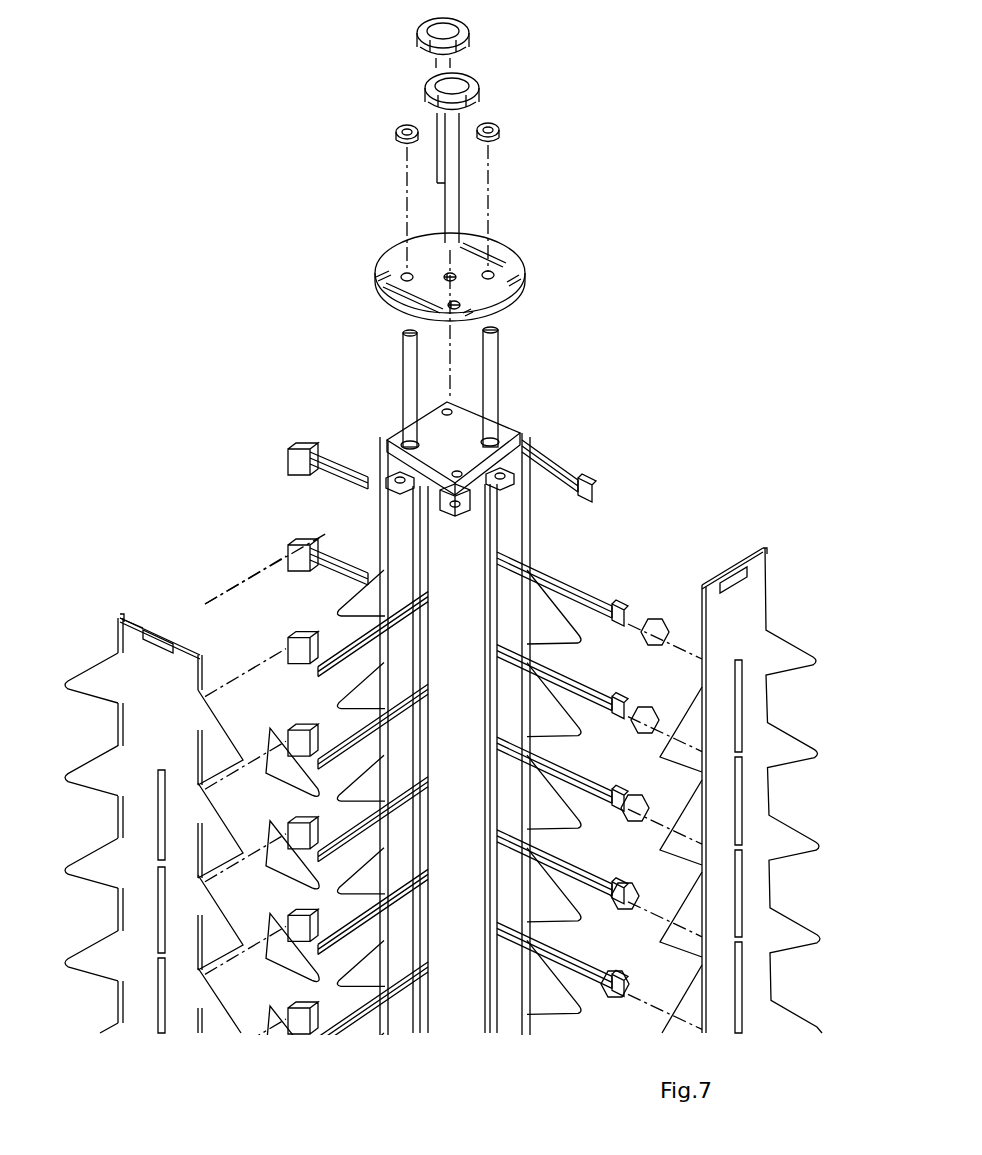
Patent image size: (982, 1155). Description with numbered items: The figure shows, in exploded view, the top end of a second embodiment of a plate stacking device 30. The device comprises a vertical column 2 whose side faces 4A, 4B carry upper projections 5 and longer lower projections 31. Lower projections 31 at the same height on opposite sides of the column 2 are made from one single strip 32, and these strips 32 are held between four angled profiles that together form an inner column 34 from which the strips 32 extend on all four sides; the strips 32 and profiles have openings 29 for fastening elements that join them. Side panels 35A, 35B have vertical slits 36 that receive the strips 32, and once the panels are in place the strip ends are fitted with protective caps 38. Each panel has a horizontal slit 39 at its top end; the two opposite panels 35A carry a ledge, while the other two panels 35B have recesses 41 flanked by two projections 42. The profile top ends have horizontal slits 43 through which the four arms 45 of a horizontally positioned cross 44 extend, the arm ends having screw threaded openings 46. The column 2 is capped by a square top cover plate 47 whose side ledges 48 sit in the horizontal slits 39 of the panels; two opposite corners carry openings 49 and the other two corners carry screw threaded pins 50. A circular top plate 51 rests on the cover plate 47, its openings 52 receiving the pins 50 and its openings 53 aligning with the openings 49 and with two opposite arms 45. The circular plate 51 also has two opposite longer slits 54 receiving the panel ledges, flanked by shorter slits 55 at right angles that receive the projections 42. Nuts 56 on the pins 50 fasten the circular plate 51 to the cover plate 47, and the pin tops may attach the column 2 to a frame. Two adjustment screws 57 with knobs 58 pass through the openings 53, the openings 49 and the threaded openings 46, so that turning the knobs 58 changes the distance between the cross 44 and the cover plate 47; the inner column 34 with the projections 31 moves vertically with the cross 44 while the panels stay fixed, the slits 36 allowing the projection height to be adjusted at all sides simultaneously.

The vertical column 2 is at (671, 420).
The side face 4A is at (433, 784).
The side face 4B is at (753, 756).
The upper projections 5 is at (98, 953).
The openings 29 is at (540, 877).
The plate stacking device 30 is at (706, 253).
The lower projections 31 is at (407, 905).
The strip 32 is at (340, 638).
The inner column 34 is at (517, 463).
The side panel 35A is at (133, 628).
The side panel 35B is at (752, 582).
The vertical slits 36 is at (158, 808).
The protective caps 38 is at (596, 496).
The horizontal slit 39 is at (120, 625).
The recesses 41 is at (734, 552).
The projections 42 is at (705, 583).
The horizontal slits 43 is at (417, 495).
The cross 44 is at (423, 498).
The arms 45 is at (533, 483).
The screw threaded openings 46 is at (373, 500).
The square top cover plate 47 is at (437, 440).
The side ledges 48 is at (420, 462).
The openings 49 is at (440, 408).
The screw threaded pins 50 is at (497, 360).
The circular top plate 51 is at (397, 262).
The openings 52 is at (494, 275).
The openings 53 is at (457, 247).
The longer slits 54 is at (417, 272).
The shorter slits 55 is at (470, 311).
The nuts 56 is at (400, 140).
The adjustment screws 57 is at (455, 212).
The knobs 58 is at (460, 83).